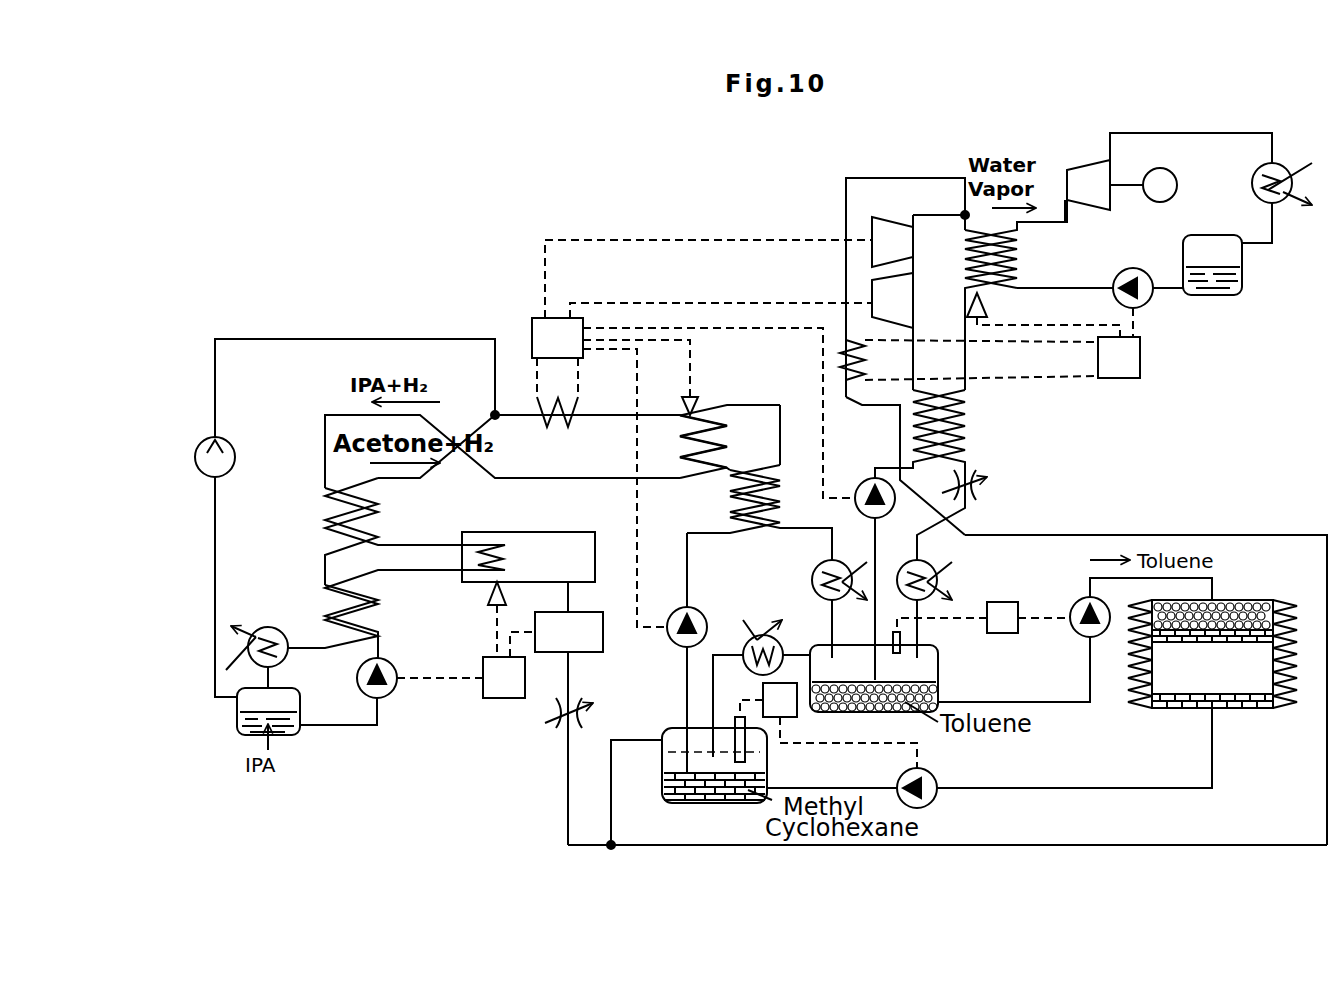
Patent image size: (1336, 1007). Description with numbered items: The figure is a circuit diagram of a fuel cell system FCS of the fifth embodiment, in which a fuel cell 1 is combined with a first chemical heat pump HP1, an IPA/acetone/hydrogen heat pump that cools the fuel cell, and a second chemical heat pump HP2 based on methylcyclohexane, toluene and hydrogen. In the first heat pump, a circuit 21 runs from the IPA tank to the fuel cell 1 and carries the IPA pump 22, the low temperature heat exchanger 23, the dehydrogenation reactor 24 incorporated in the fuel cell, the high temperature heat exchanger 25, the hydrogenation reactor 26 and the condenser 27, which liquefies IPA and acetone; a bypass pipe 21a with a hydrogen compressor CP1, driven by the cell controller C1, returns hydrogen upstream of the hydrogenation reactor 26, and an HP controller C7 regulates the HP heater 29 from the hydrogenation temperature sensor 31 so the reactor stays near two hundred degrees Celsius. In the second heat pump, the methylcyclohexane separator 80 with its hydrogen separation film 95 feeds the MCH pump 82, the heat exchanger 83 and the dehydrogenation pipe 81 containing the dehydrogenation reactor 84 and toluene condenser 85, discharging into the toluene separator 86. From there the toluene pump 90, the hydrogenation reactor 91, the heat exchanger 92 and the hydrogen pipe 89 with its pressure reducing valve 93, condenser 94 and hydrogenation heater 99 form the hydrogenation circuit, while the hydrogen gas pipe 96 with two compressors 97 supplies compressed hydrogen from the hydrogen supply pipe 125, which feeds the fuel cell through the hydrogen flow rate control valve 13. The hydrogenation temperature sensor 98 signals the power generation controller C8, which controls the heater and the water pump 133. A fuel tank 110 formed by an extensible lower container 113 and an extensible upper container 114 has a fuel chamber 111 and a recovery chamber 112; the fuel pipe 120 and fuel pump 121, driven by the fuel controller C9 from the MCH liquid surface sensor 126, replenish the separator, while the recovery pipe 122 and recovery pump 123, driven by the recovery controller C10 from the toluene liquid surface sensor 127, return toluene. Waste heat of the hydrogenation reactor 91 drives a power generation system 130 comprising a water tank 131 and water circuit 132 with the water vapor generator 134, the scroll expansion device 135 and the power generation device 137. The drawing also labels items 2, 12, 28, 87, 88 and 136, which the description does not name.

The fuel cell 1 is at (556, 530).
The hydrogen supply system 2 is at (1104, 498).
The flow control valve 12 is at (552, 730).
The hydrogen flow rate control valve 13 is at (605, 648).
The circuit 21 is at (380, 720).
The bypass pipe 21a is at (262, 341).
The IPA pump 22 is at (384, 672).
The low temperature heat exchanger 23 is at (322, 598).
The dehydrogenation reactor 24 is at (488, 540).
The high temperature heat exchanger 25 is at (322, 527).
The hydrogenation reactor 26 is at (696, 482).
The condenser 27 is at (262, 628).
The valve 28 is at (487, 598).
The HP heater 29 is at (563, 420).
The hydrogenation temperature sensor 31 is at (684, 402).
The methylcyclohexane separator 80 is at (668, 728).
The dehydrogenation pipe 81 is at (685, 578).
The MCH pump 82 is at (696, 612).
The heat exchanger 83 is at (790, 492).
The dehydrogenation reactor 84 is at (722, 404).
The toluene condenser 85 is at (812, 582).
The toluene separator 86 is at (940, 668).
The pipe 87 is at (716, 650).
The heater 88 is at (775, 629).
The hydrogen pipe 89 is at (844, 202).
The toluene pump 90 is at (860, 484).
The hydrogenation reactor 91 is at (968, 268).
The heat exchanger 92 is at (972, 418).
The pressure reducing valve 93 is at (990, 497).
The condenser 94 is at (937, 583).
The hydrogen separation film 95 is at (668, 756).
The hydrogen gas pipe 96 is at (1140, 845).
The compressors 97 is at (870, 268).
The hydrogenation temperature sensor 98 is at (988, 312).
The hydrogenation heater 99 is at (868, 356).
The fuel tank 110 is at (1211, 654).
The fuel chamber 111 is at (1243, 708).
The recovery chamber 112 is at (1252, 606).
The extensible lower container 113 is at (1297, 684).
The extensible upper container 114 is at (1128, 632).
The fuel pipe 120 is at (1084, 786).
The fuel pump 121 is at (937, 783).
The recovery pipe 122 is at (1048, 704).
The recovery pump 123 is at (1074, 602).
The hydrogen supply pipe 125 is at (566, 808).
The MCH liquid surface sensor 126 is at (748, 757).
The toluene liquid surface sensor 127 is at (891, 630).
The power generation system 130 is at (1228, 305).
The water tank 131 is at (1244, 283).
The water circuit 132 is at (1030, 284).
The water pump 133 is at (1140, 270).
The water vapor generator 134 is at (1018, 240).
The scroll expansion device 135 is at (1098, 158).
The condenser 136 is at (1285, 213).
The power generation device 137 is at (1174, 172).
The cell controller C1 is at (500, 700).
The HP controller C7 is at (532, 326).
The power generation controller C8 is at (1142, 370).
The fuel controller C9 is at (797, 710).
The recovery controller C10 is at (1018, 630).
The hydrogen compressor CP1 is at (234, 455).
The first chemical heat pump HP1 is at (312, 334).
The second chemical heat pump HP2 is at (1003, 456).
The fuel cell system FCS is at (480, 270).